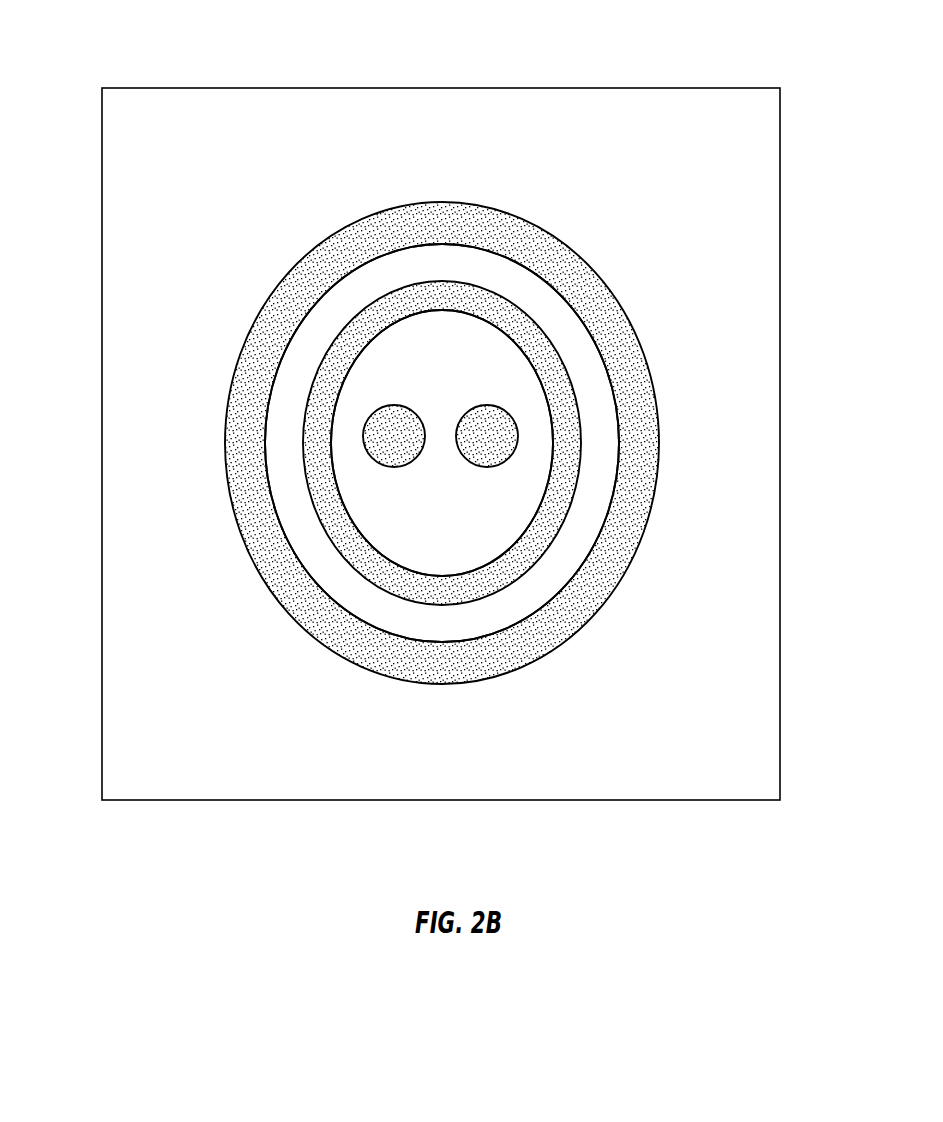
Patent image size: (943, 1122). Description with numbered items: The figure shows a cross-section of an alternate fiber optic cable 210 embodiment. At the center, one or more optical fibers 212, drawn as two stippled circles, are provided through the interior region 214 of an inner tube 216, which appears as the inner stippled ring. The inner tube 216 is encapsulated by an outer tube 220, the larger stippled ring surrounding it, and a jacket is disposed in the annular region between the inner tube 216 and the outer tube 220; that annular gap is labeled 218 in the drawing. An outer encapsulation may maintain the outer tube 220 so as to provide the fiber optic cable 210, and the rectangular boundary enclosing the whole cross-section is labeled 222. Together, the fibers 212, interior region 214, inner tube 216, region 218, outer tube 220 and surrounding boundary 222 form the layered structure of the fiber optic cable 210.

The fiber optic cable 210 is at (116, 34).
The optical fibers 212 is at (402, 412).
The interior region 214 is at (353, 377).
The inner tube 216 is at (318, 437).
The gap between sheath layers 218 is at (275, 477).
The outer tube 220 is at (248, 505).
The enclosure boundary 222 is at (753, 303).